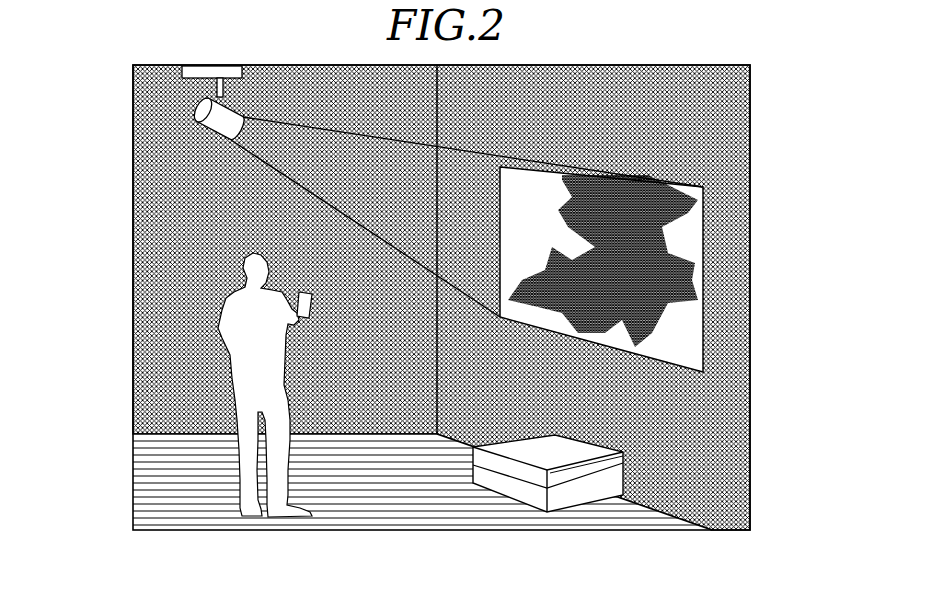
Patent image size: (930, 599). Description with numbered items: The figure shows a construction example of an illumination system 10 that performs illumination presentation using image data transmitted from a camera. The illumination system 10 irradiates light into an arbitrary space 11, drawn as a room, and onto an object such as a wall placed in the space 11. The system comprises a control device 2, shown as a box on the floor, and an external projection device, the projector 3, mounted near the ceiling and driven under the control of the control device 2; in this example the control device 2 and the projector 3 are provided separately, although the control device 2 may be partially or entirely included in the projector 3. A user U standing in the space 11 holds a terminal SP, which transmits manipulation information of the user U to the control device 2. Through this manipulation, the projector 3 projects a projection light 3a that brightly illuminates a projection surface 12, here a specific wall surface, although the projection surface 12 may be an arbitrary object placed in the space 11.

The illumination system 10 is at (404, 297).
The space 11 is at (480, 123).
The projection surface 12 is at (688, 324).
The projector 3 is at (202, 103).
The projection light 3a is at (362, 133).
The user U is at (230, 342).
The terminal SP is at (312, 318).
The control device 2 is at (603, 483).